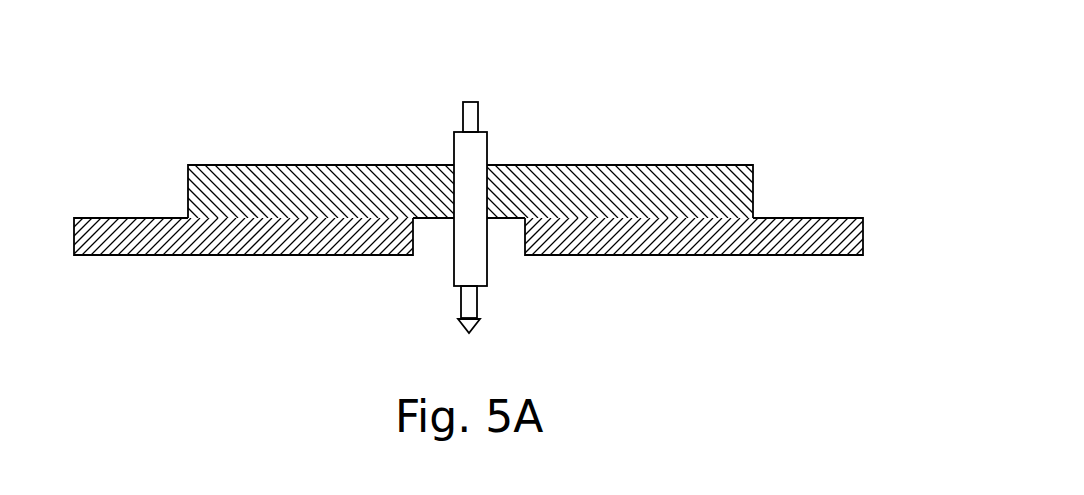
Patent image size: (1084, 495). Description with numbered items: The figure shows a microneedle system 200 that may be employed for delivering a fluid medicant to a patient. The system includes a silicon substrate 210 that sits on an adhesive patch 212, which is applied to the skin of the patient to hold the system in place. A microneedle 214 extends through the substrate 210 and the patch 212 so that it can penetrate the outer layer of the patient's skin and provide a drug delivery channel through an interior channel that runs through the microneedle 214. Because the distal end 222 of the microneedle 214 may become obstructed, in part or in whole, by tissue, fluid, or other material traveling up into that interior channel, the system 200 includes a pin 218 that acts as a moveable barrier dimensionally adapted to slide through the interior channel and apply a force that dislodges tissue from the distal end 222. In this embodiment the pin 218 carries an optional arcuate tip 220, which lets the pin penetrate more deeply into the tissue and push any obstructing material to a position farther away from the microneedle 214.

The microneedle system 200 is at (540, 101).
The silicon substrate 210 is at (722, 178).
The adhesive patch 212 is at (864, 232).
The microneedle 214 is at (453, 157).
The pin 218 is at (466, 101).
The arcuate tip 220 is at (467, 337).
The distal end 222 is at (458, 292).